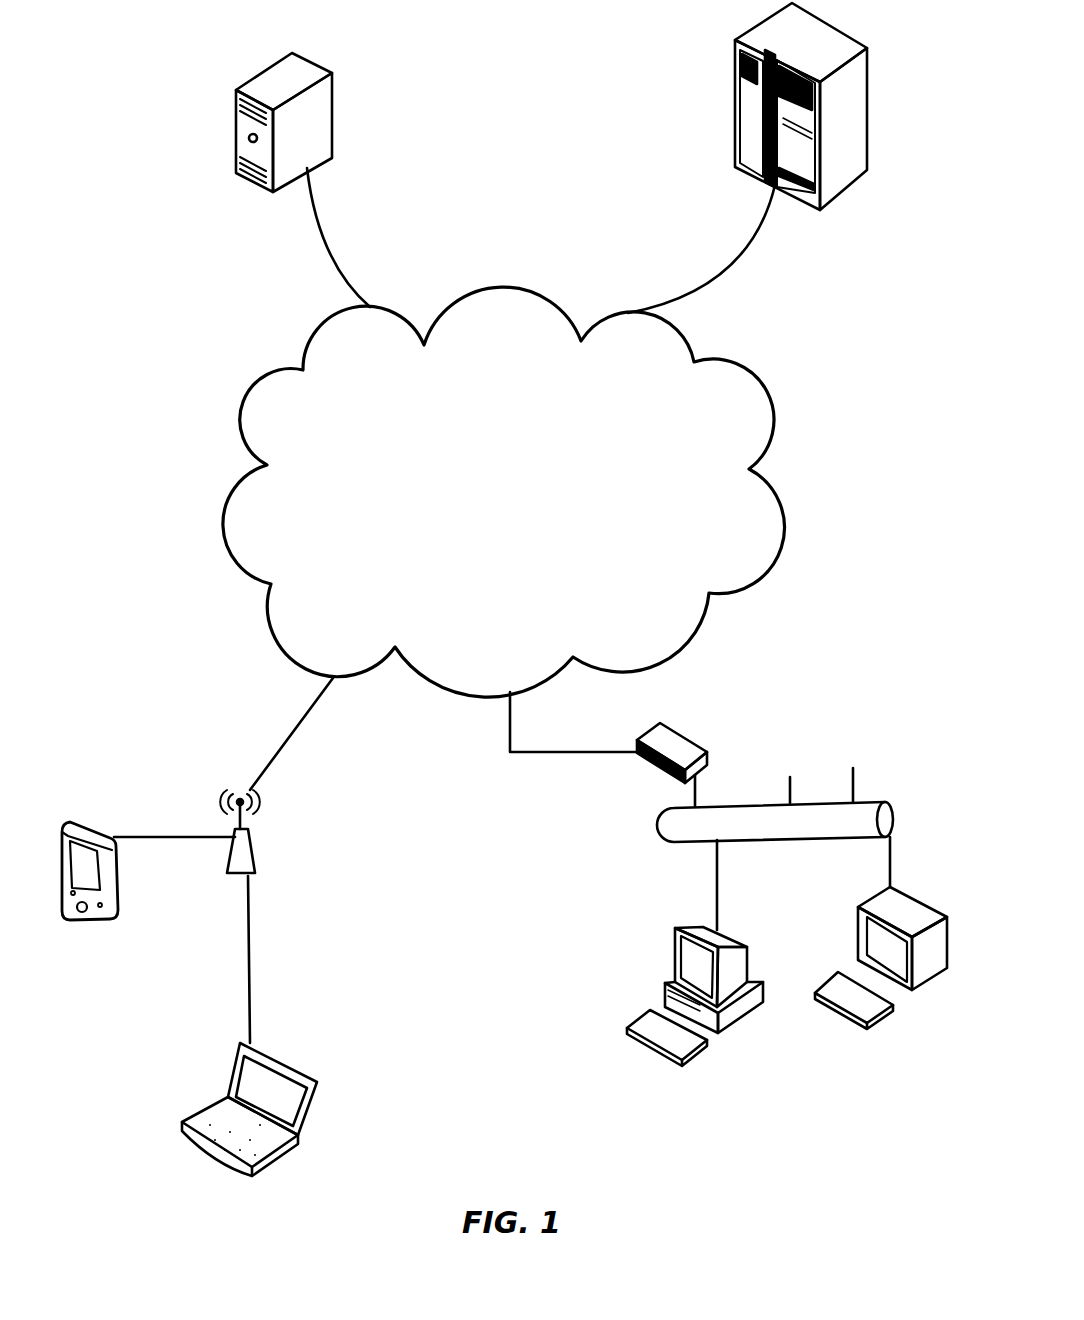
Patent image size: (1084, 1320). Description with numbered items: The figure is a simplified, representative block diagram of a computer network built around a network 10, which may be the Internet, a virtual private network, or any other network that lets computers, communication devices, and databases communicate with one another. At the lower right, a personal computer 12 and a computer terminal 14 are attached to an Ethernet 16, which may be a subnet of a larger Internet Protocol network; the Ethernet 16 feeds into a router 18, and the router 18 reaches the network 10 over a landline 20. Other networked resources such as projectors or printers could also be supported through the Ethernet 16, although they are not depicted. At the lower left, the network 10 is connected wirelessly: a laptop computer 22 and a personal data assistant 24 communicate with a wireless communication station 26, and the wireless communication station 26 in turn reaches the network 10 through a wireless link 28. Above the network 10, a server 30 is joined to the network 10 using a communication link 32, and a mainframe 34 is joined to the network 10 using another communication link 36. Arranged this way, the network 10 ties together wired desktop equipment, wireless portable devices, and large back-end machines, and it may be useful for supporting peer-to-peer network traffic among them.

The network 10 is at (172, 375).
The personal computer 12 is at (672, 978).
The computer terminal 14 is at (928, 905).
The Ethernet 16 is at (885, 800).
The router 18 is at (707, 748).
The landline 20 is at (553, 757).
The laptop computer 22 is at (280, 1160).
The personal data assistant 24 is at (92, 823).
The wireless communication station 26 is at (255, 868).
The wireless link 28 is at (287, 746).
The server 30 is at (332, 120).
The communication link 32 is at (345, 280).
The mainframe 34 is at (833, 200).
The communication link 36 is at (745, 250).